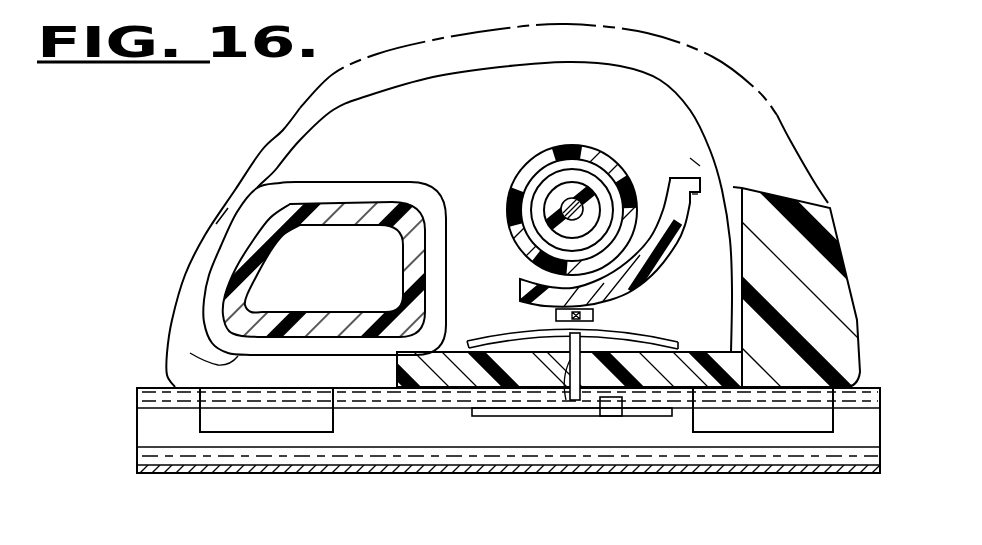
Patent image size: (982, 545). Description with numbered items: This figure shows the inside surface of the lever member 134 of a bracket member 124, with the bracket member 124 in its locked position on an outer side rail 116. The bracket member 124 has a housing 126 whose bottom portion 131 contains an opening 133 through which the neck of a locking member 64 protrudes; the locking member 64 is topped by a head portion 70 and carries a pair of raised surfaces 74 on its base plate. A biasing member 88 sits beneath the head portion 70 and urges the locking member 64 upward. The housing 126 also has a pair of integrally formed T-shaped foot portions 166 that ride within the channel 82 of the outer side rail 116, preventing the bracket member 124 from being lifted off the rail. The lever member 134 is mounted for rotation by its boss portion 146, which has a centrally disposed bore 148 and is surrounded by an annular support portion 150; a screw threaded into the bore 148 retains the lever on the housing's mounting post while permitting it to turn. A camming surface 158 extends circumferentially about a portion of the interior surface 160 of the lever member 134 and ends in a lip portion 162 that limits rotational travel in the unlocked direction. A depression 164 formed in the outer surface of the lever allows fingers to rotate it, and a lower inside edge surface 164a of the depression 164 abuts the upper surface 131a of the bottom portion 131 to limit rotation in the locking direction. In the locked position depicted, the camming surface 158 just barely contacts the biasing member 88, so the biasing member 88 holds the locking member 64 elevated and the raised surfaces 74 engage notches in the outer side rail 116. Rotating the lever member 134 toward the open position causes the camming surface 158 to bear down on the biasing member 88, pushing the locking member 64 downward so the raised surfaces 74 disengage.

The outer side rail 116 is at (209, 466).
The channel 82 is at (415, 439).
The T-shaped foot portions 166 is at (205, 423).
The locking member 64 is at (508, 421).
The raised surfaces 74 is at (610, 416).
The lever member 134 is at (364, 136).
The bracket member 124 is at (177, 213).
The depression 164 is at (250, 313).
The lower inside edge surface 164a is at (190, 353).
The bottom portion 131 is at (716, 345).
The upper surface 131a is at (440, 345).
The housing 126 is at (799, 208).
The annular support portion 150 is at (593, 143).
The bore 148 is at (587, 194).
The boss portion 146 is at (565, 193).
The camming surface 158 is at (665, 268).
The interior surface 160 is at (694, 203).
The lip portion 162 is at (697, 163).
The biasing member 88 is at (514, 336).
The opening 133 is at (576, 400).
The head portion 70 is at (594, 316).